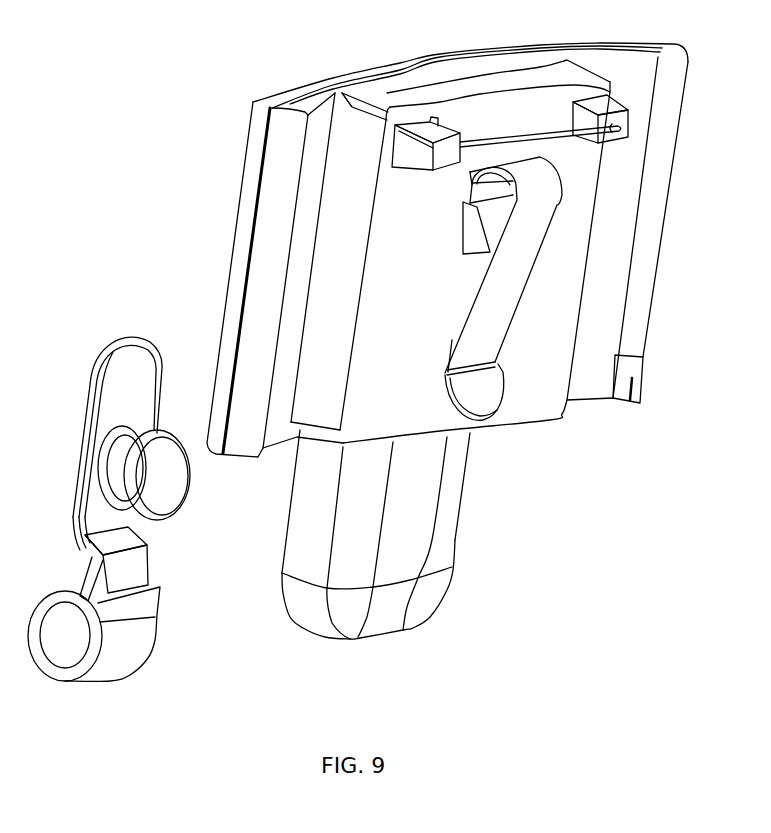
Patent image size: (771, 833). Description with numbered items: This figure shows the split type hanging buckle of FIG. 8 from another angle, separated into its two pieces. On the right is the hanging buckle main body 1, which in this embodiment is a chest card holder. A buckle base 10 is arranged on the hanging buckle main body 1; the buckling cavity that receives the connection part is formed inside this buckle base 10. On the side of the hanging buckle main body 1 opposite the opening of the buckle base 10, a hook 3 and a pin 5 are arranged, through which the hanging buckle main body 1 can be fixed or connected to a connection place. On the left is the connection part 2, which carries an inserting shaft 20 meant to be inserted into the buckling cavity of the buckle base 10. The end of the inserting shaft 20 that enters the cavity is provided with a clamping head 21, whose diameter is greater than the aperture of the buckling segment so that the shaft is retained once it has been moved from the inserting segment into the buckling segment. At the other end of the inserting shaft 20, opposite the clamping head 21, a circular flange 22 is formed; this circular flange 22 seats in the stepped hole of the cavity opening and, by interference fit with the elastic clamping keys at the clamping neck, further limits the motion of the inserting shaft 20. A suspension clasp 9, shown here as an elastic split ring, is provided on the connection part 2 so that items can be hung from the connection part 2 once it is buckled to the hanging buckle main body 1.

The hanging buckle main body 1 is at (245, 162).
The connection part 2 is at (92, 372).
The hook 3 is at (507, 300).
The pin 5 is at (555, 140).
The suspension clasp 9 is at (115, 663).
The buckle base 10 is at (400, 615).
The inserting shaft 20 is at (130, 445).
The clamping head 21 is at (160, 437).
The circular flange 22 is at (103, 486).